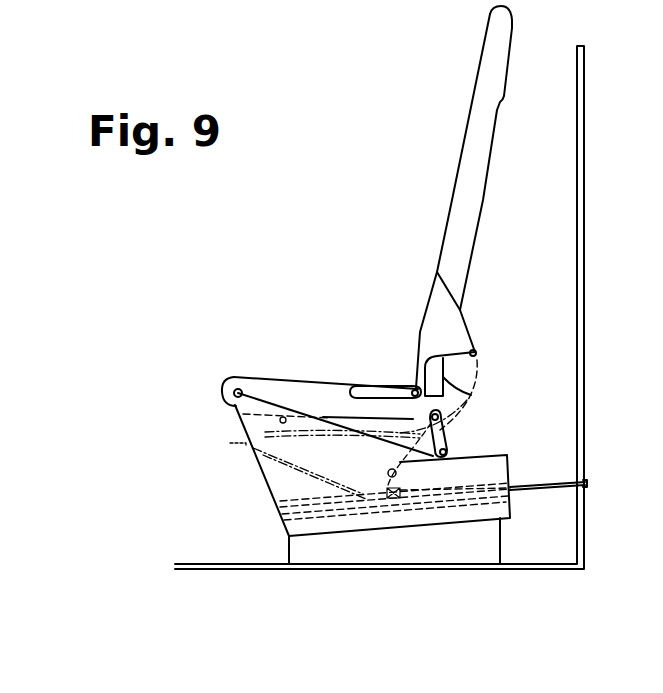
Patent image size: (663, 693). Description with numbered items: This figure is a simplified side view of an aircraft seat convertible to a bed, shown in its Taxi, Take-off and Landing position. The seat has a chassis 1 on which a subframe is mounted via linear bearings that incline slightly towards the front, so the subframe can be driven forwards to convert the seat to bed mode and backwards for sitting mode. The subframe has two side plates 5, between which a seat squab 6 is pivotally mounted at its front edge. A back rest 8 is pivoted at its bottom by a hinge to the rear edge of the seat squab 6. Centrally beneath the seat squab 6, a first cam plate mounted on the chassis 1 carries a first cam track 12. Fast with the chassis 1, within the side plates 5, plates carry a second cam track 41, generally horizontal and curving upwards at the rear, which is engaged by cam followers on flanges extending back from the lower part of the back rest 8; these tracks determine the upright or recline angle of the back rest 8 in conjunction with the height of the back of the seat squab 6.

The chassis 1 is at (427, 550).
The side plates 5 is at (285, 486).
The seat squab 6 is at (300, 386).
The back rest 8 is at (470, 162).
The first cam track 12 is at (320, 487).
The second cam track 41 is at (440, 380).